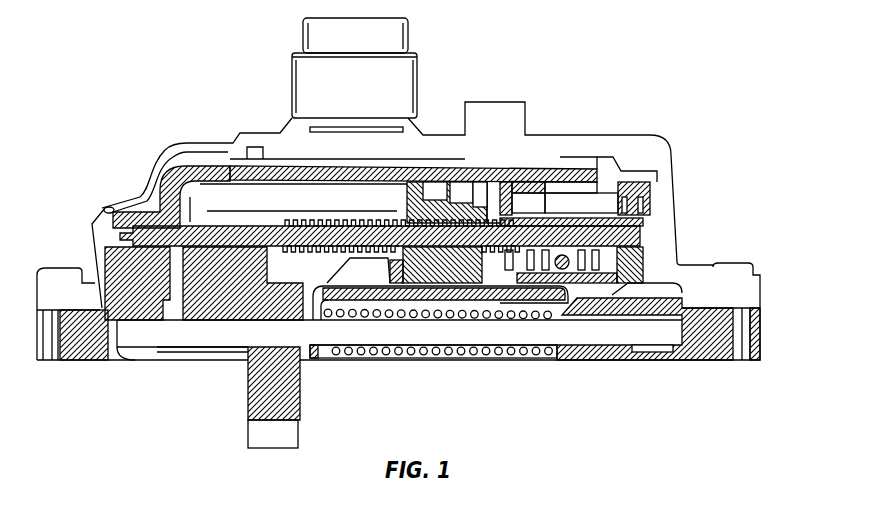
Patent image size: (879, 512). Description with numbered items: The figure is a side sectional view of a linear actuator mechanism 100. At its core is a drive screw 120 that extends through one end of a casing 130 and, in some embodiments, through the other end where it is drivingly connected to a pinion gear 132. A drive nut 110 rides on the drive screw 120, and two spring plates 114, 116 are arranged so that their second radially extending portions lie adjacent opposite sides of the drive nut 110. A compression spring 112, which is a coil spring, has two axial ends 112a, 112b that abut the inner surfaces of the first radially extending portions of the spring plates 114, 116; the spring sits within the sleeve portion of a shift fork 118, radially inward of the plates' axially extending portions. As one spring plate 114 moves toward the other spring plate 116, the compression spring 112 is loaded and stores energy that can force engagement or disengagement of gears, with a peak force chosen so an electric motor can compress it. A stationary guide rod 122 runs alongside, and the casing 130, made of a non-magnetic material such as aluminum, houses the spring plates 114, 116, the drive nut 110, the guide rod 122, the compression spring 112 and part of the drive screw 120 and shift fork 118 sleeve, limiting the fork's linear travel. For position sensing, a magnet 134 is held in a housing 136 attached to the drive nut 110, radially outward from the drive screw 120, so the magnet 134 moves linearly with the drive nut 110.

The linear actuator mechanism 100 is at (398, 233).
The drive nut 110 is at (416, 165).
The compression spring 112 is at (462, 355).
The axial end 112a is at (104, 210).
The axial end 112b is at (640, 282).
The spring plate 114 is at (315, 355).
The spring plate 116 is at (560, 355).
The shift fork 118 is at (248, 402).
The drive screw 120 is at (207, 240).
The stationary guide rod 122 is at (197, 347).
The casing 130 is at (213, 172).
The pinion gear 132 is at (650, 186).
The magnet 134 is at (463, 188).
The housing 136 is at (481, 181).